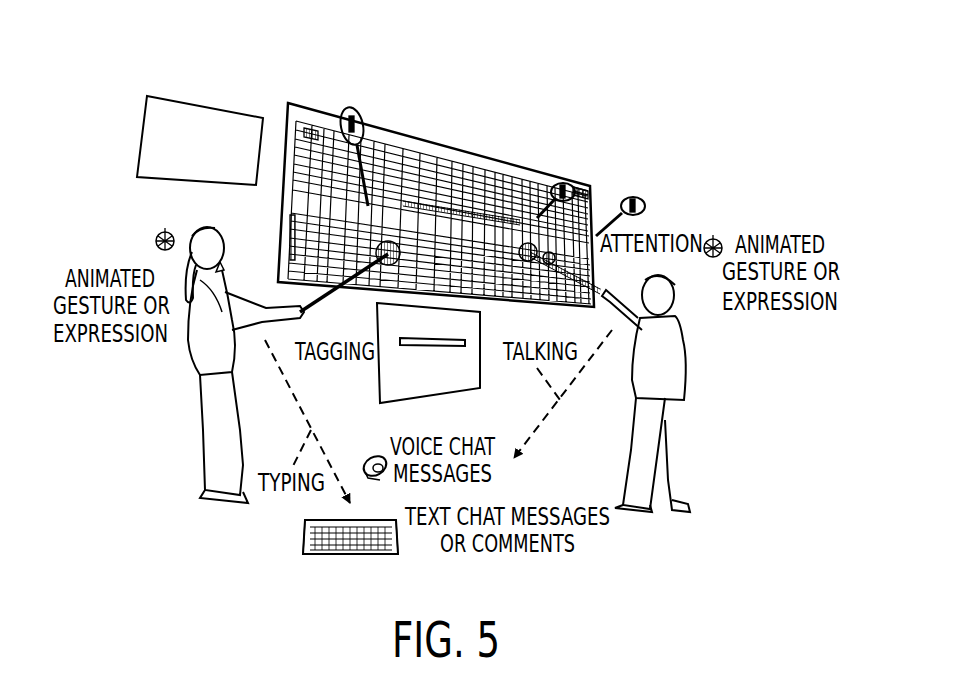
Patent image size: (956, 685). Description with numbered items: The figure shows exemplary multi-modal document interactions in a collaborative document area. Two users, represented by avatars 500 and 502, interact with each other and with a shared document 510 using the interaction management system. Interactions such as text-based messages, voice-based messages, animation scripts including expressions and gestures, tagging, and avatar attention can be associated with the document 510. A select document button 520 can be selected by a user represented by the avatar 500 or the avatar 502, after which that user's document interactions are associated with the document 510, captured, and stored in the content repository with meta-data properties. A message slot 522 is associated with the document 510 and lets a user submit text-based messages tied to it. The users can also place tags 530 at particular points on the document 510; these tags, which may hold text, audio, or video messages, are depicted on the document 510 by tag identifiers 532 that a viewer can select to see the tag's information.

The avatar 500 is at (168, 413).
The avatar 502 is at (722, 390).
The document 510 is at (287, 108).
The select document button 520 is at (142, 128).
The message slot 522 is at (378, 378).
The tags 530 is at (338, 95).
The tag identifiers 532 is at (359, 108).